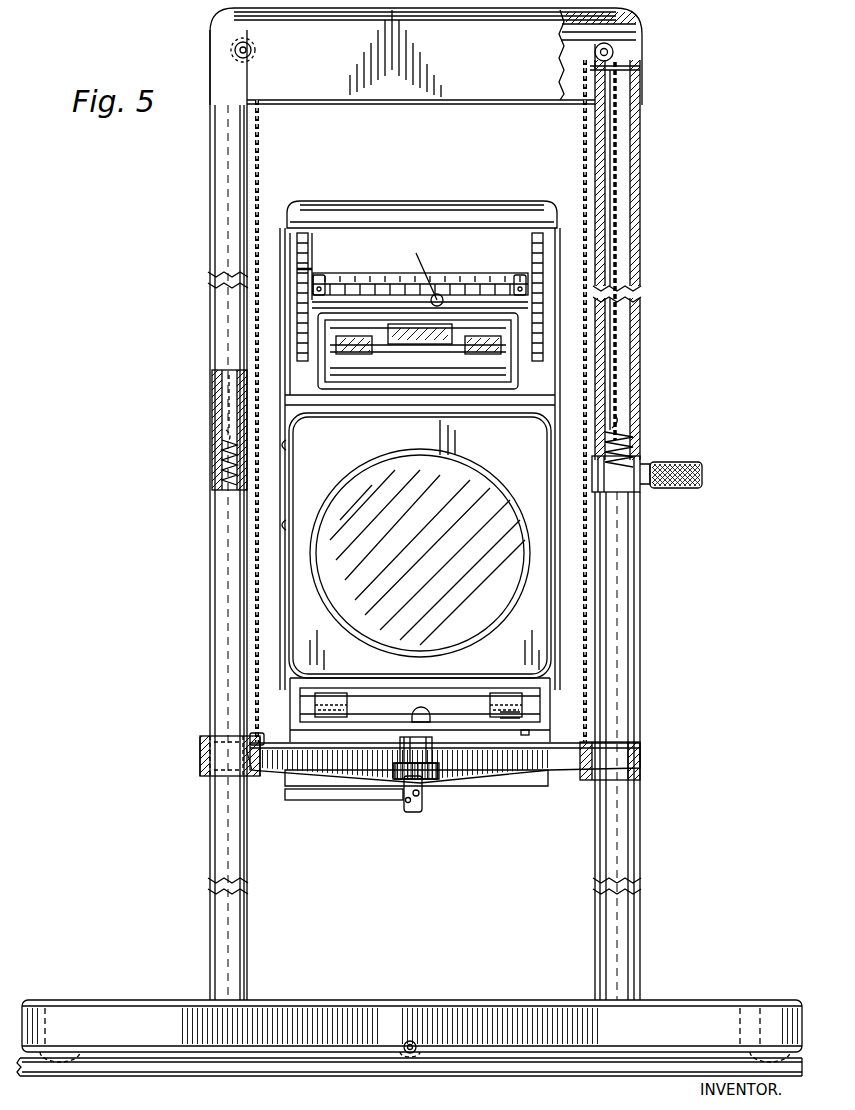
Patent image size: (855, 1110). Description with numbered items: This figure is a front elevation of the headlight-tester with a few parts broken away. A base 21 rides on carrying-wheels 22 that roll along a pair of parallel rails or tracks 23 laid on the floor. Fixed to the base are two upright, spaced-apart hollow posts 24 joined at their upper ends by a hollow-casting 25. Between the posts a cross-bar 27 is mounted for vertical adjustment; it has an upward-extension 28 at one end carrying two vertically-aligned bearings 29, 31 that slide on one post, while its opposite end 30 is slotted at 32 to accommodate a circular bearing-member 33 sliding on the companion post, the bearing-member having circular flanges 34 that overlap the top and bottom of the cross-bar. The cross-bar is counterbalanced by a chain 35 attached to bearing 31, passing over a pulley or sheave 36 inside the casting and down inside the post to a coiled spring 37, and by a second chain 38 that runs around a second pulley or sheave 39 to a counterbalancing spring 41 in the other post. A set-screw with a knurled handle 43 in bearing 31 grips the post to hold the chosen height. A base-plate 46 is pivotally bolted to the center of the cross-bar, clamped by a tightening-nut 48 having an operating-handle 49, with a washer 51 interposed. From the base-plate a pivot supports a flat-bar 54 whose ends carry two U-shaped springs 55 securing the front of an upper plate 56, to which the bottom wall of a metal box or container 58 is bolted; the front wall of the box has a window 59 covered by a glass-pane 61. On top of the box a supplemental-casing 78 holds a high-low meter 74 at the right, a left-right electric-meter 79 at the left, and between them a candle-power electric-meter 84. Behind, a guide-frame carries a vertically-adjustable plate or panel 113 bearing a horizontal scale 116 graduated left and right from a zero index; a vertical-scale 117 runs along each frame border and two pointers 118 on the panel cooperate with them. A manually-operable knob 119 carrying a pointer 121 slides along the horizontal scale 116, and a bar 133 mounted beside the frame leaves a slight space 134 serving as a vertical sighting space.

The base 21 is at (393, 1012).
The carrying-wheels 22 is at (70, 1060).
The rails or tracks 23 is at (196, 1062).
The upright hollow posts 24 is at (222, 549).
The hollow-casting 25 is at (426, 56).
The cross-bar 27 is at (518, 785).
The upward-extension 28 is at (590, 604).
The bearing 29 is at (615, 760).
The opposite end of cross-bar 30 is at (258, 733).
The bearing 31 is at (616, 478).
The slot 32 is at (250, 772).
The circular bearing-member 33 is at (200, 758).
The circular flanges 34 is at (200, 736).
The chain 35 is at (583, 167).
The pulley or sheave 36 is at (614, 52).
The coiled spring 37 is at (616, 440).
The chain 38 is at (262, 174).
The pulley or sheave 39 is at (232, 57).
The counterbalancing spring 41 is at (212, 462).
The knurled handle 43 is at (690, 466).
The base-plate 46 is at (527, 730).
The tightening-nut 48 is at (412, 812).
The operating-handle 49 is at (324, 800).
The washer 51 is at (428, 785).
The flat-bar 54 is at (522, 712).
The U-shaped springs 55 is at (331, 698).
The upper plate 56 is at (421, 700).
The metal box or container 58 is at (553, 405).
The window 59 is at (532, 522).
The glass-pane 61 is at (420, 478).
The high-low meter 74 is at (483, 356).
The supplemental-casing 78 is at (466, 308).
The left-right electric-meter 79 is at (353, 356).
The candle-power electric-meter 84 is at (418, 345).
The vertically-adjustable plate or panel 113 is at (375, 300).
The horizontal scale 116 is at (348, 270).
The vertical-scale 117 is at (296, 306).
The pointers 118 is at (319, 276).
The manually-operable knob 119 is at (440, 294).
The pointer 121 is at (419, 268).
The bar 133 is at (298, 328).
The space 134 is at (296, 265).